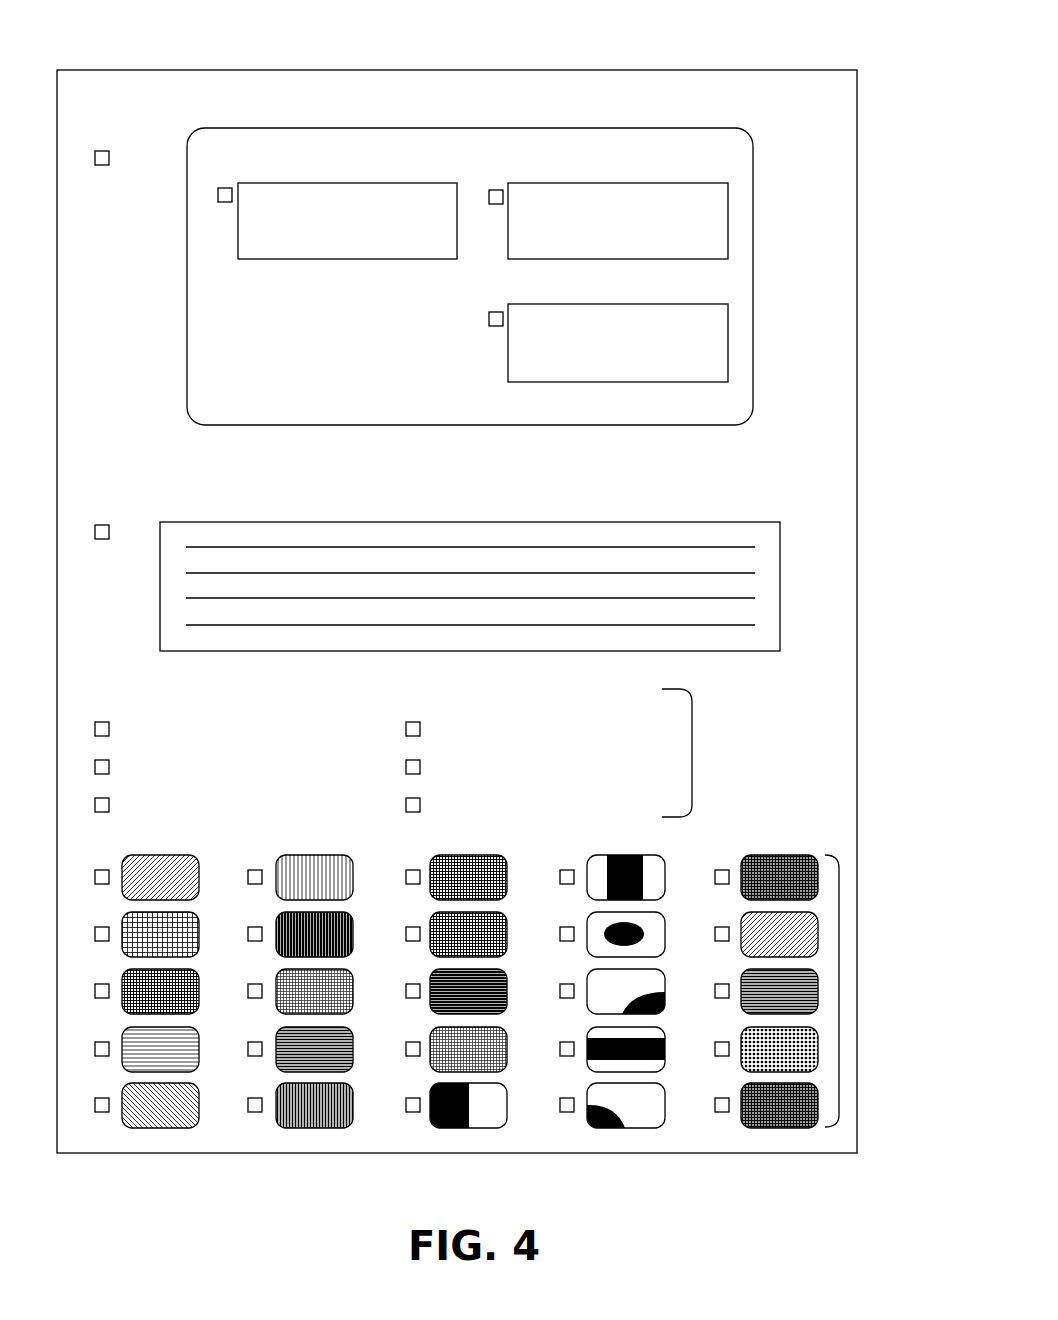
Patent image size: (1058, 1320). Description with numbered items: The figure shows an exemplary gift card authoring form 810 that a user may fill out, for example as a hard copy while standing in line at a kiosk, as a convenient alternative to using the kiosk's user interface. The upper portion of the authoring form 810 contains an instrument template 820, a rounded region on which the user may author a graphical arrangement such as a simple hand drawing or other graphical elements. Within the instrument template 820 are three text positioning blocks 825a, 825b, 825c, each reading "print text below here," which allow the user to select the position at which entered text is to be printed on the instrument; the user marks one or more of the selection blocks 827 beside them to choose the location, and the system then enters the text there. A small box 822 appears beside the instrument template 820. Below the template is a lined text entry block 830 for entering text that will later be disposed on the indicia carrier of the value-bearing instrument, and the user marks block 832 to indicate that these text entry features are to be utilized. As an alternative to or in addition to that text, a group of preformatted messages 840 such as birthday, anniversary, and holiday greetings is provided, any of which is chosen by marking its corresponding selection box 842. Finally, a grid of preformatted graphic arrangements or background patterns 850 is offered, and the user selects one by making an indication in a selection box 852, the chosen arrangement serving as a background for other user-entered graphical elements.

The authoring form 810 is at (623, 70).
The instrument template 820 is at (753, 199).
The region selection checkbox 822 is at (103, 150).
The selection block 827 is at (223, 188).
The text positioning block 825a is at (392, 183).
The text positioning block 825b is at (728, 243).
The text positioning block 825c is at (728, 337).
The text entry block 830 is at (547, 522).
The block 832 is at (103, 524).
The preformatted messages 840 is at (692, 740).
The selection box 842 is at (412, 722).
The preformatted graphic arrangements or background patterns 850 is at (839, 978).
The selection box 852 is at (722, 870).